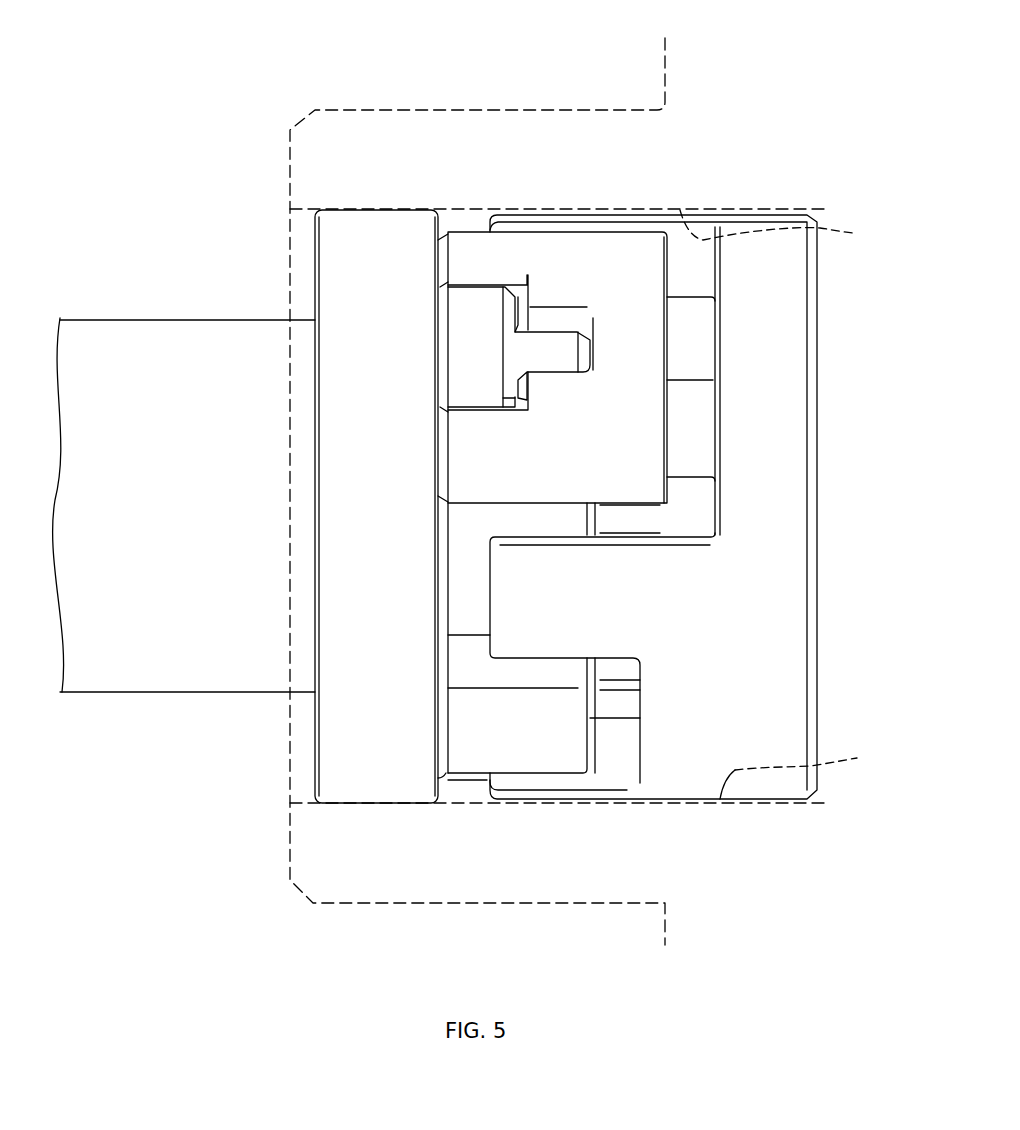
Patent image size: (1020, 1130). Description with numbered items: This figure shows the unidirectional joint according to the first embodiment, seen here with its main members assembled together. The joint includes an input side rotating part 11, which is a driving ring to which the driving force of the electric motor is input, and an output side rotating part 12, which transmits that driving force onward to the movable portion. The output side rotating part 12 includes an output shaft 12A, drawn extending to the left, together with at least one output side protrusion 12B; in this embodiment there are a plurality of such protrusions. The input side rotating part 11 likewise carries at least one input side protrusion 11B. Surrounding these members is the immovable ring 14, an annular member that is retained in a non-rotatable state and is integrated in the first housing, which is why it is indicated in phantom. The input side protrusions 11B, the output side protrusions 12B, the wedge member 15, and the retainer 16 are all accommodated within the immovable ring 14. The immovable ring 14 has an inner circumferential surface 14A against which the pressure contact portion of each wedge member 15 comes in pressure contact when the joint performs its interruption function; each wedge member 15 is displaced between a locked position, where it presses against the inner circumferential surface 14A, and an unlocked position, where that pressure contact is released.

The input side rotating part 11 is at (773, 488).
The input side protrusion 11B is at (563, 630).
The output side rotating part 12 is at (315, 753).
The output shaft 12A is at (155, 345).
The output side protrusion 12B is at (508, 755).
The immovable ring 14 is at (514, 110).
The inner circumferential surface 14A is at (792, 504).
The wedge member 15 is at (470, 320).
The retainer 16 is at (635, 322).